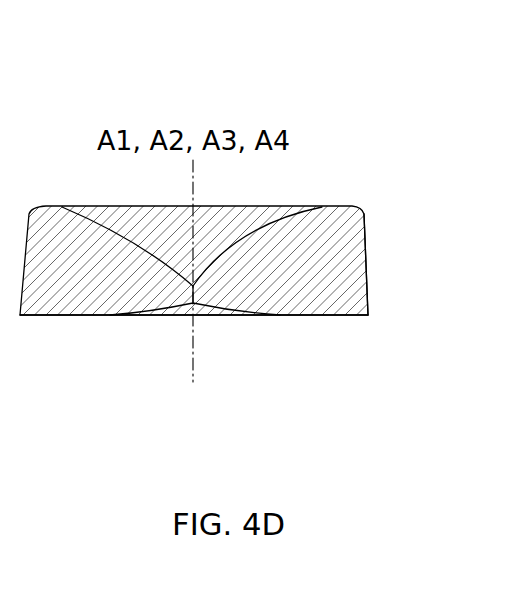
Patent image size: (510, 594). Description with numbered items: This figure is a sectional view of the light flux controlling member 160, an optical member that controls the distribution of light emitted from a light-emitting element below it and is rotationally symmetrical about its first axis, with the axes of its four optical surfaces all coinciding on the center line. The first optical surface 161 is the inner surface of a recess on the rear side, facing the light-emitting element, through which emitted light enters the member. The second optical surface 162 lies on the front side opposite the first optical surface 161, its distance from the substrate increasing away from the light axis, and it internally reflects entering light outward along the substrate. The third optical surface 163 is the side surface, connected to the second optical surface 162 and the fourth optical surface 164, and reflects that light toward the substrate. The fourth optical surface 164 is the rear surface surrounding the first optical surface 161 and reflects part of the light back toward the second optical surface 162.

The light flux controlling member 160 is at (241, 218).
The first optical surface 161 is at (175, 317).
The second optical surface 162 is at (283, 212).
The third optical surface 163 is at (365, 248).
The fourth optical surface 164 is at (62, 317).